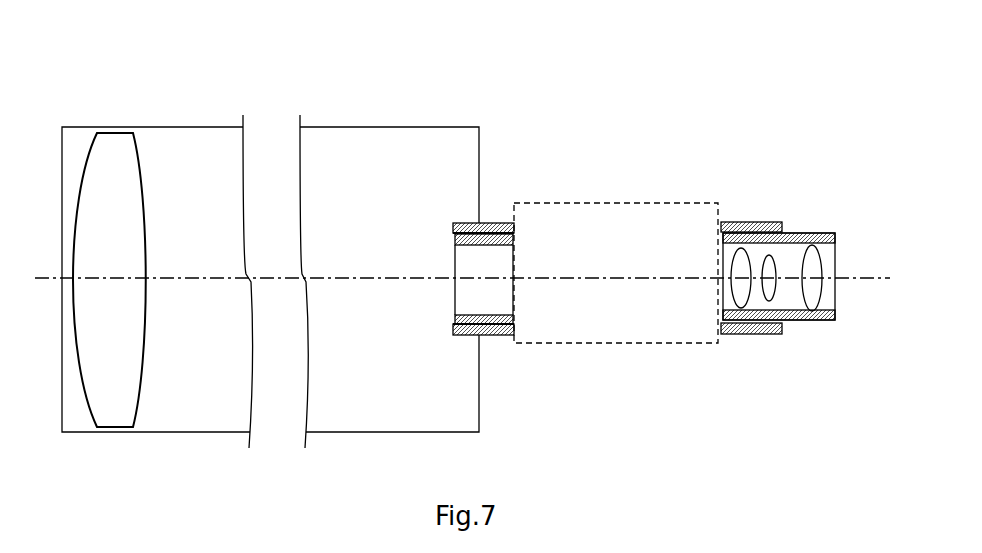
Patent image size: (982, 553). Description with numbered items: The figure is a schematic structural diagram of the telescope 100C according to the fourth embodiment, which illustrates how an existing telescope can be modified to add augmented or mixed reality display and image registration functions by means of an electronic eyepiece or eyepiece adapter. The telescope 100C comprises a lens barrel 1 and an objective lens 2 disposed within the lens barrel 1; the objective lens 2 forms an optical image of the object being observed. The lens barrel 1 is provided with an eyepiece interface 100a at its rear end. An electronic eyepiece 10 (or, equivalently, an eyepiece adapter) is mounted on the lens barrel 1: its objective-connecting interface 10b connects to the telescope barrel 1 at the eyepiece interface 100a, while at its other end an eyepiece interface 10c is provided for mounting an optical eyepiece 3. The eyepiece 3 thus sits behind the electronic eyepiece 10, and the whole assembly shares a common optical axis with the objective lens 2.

The telescope 100C is at (168, 109).
The lens barrel 1 is at (392, 127).
The objective lens 2 is at (145, 345).
The eyepiece interface 100a is at (492, 222).
The objective-connecting interface 10b is at (452, 316).
The electronic eyepiece 10 is at (628, 192).
The eyepiece interface 10c is at (752, 222).
The eyepiece 3 is at (805, 320).